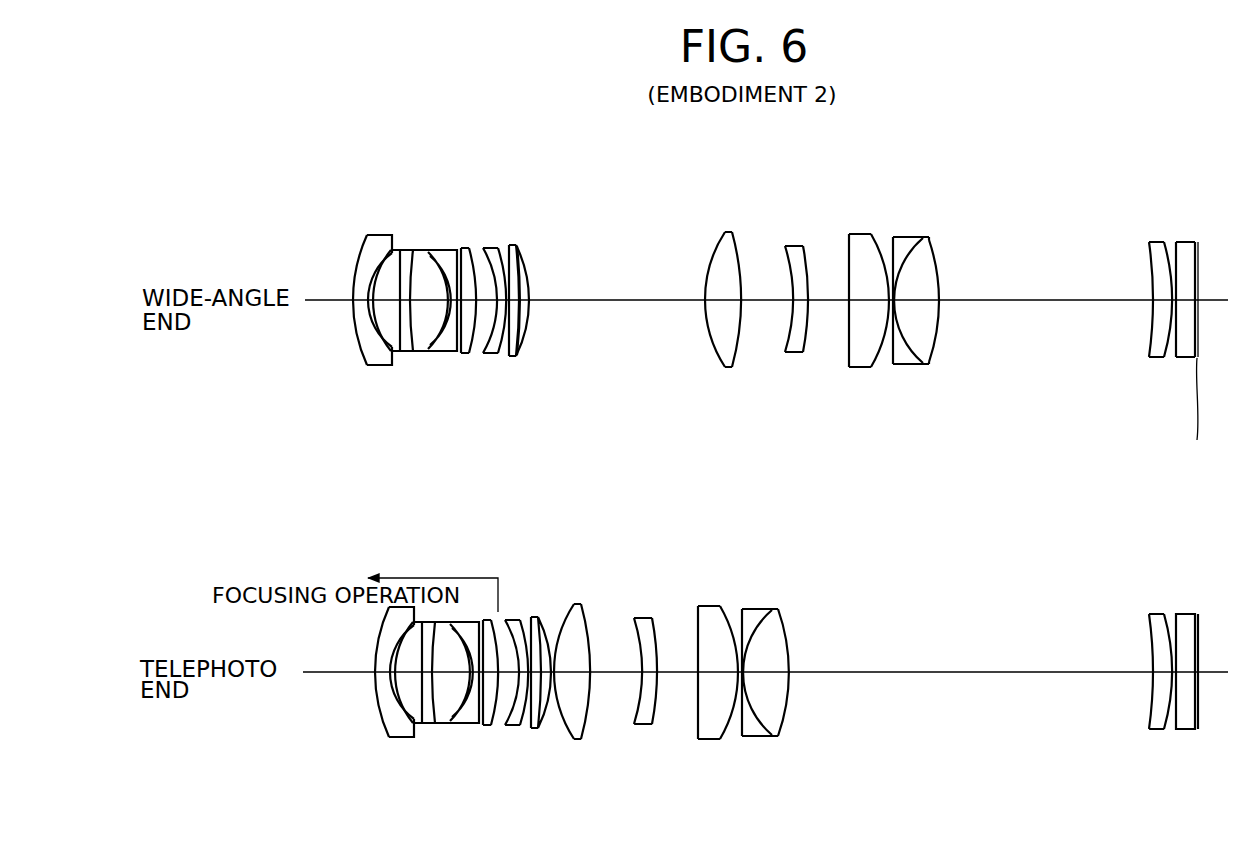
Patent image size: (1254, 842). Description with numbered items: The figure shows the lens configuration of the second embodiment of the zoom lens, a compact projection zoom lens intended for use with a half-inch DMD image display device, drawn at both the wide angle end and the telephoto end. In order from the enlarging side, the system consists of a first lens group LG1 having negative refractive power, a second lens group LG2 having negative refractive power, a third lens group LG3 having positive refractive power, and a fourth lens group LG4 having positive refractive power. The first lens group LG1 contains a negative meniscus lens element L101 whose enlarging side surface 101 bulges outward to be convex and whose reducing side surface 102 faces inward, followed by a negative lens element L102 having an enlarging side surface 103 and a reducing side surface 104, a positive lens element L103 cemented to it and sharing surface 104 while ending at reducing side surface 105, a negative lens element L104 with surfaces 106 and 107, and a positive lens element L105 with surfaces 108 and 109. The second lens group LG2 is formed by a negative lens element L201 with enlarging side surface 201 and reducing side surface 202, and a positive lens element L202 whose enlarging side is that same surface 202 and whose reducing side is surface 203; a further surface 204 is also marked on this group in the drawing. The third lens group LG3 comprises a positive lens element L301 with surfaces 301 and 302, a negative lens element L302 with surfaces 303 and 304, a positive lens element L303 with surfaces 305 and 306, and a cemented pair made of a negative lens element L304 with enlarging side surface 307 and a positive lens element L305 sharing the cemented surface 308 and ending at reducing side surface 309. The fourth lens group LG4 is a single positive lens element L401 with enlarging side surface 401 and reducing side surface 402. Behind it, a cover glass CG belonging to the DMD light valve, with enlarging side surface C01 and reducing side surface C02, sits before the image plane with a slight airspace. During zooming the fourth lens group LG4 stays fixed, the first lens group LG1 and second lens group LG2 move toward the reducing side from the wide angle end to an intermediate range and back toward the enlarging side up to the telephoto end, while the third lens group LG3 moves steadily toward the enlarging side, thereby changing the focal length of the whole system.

The enlarging side surface 101 is at (360, 258).
The reducing side surface 102 is at (380, 248).
The enlarging side surface 103 is at (390, 252).
The reducing side surface 104 is at (400, 250).
The reducing side surface 105 is at (414, 252).
The enlarging side surface 106 is at (431, 254).
The reducing side surface 107 is at (462, 250).
The enlarging side surface 108 is at (473, 250).
The reducing side surface 109 is at (487, 252).
The enlarging side surface 201 is at (510, 252).
The reducing side surface 202 is at (517, 252).
The reducing side surface 203 is at (527, 258).
The image-side surface of lens L202 204 is at (529, 263).
The enlarging side surface 301 is at (713, 250).
The reducing side surface 302 is at (737, 250).
The enlarging side surface 303 is at (785, 256).
The reducing side surface 304 is at (808, 250).
The enlarging side surface 305 is at (849, 256).
The reducing side surface 306 is at (886, 245).
The enlarging side surface 307 is at (896, 250).
The reducing side surface 308 is at (922, 243).
The reducing side surface 309 is at (938, 257).
The enlarging side surface 401 is at (1149, 262).
The reducing side surface 402 is at (1150, 253).
The enlarging side surface C01 is at (1176, 252).
The reducing side surface C02 is at (1194, 250).
The negative lens element L101 is at (380, 367).
The negative lens element L102 is at (408, 352).
The positive lens element L103 is at (428, 352).
The negative lens element L104 is at (468, 354).
The positive lens element L105 is at (492, 354).
The negative lens element L201 is at (512, 357).
The positive lens element L202 is at (524, 357).
The positive lens element L301 is at (726, 368).
The negative lens element L302 is at (791, 353).
The positive lens element L303 is at (862, 368).
The negative lens element L304 is at (903, 365).
The positive lens element L305 is at (932, 363).
The positive lens element L401 is at (1157, 358).
The cover glass CG is at (1185, 358).
The first lens group LG1 is at (440, 450).
The second lens group LG2 is at (512, 450).
The third lens group LG3 is at (822, 445).
The fourth lens group LG4 is at (1155, 600).